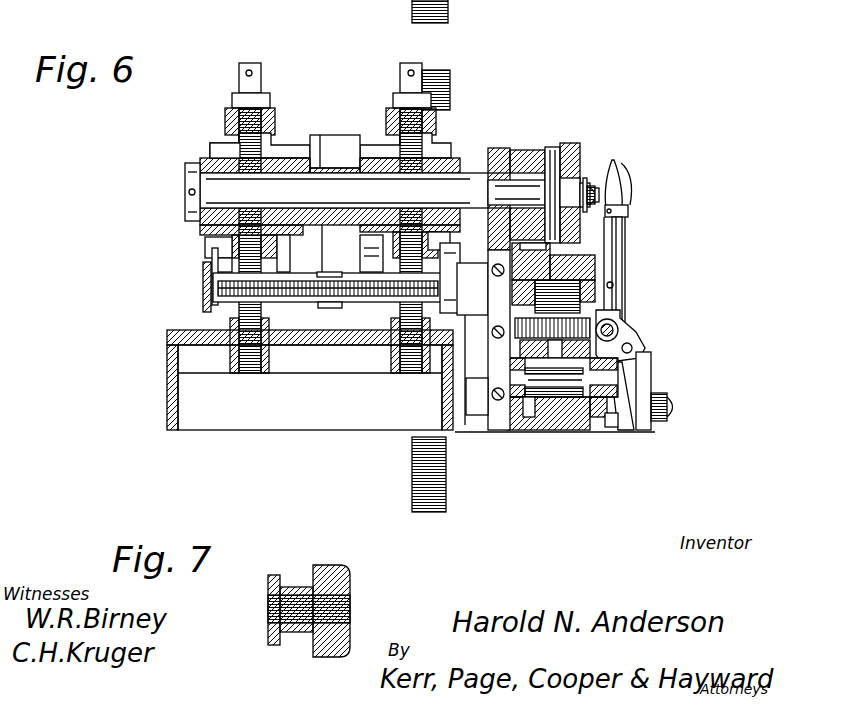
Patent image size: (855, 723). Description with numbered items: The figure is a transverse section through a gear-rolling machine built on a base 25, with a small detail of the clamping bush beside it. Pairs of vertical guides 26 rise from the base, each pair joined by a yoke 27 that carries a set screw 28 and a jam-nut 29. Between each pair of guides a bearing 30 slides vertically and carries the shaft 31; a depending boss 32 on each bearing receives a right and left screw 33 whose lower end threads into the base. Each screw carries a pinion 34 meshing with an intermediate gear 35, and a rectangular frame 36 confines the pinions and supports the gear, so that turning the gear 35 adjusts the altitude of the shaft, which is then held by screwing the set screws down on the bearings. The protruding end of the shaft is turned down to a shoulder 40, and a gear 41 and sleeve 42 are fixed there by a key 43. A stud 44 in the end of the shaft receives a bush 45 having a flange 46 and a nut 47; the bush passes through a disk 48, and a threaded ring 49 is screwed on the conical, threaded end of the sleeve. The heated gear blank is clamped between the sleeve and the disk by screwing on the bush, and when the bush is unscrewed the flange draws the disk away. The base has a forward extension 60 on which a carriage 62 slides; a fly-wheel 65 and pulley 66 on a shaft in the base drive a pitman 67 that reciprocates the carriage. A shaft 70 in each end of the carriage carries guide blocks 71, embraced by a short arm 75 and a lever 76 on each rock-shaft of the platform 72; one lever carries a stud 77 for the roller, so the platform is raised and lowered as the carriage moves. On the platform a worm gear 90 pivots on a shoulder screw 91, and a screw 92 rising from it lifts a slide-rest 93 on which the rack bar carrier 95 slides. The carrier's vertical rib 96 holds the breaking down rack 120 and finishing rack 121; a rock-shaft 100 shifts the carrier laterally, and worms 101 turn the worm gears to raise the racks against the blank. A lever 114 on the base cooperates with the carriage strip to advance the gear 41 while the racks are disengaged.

In FIG. 6, the base 25 is at (170, 353).
In FIG. 6, the vertical guides 26 is at (272, 147).
In FIG. 6, the yoke 27 is at (393, 115).
In FIG. 6, the set screw 28 is at (410, 66).
In FIG. 6, the jam-nut 29 is at (398, 100).
In FIG. 6, the bearing 30 is at (200, 228).
In FIG. 6, the shaft 31 is at (242, 186).
In FIG. 6, the depending boss 32 is at (233, 240).
In FIG. 6, the right and left screw 33 is at (207, 270).
In FIG. 6, the pinion 34 is at (233, 295).
In FIG. 6, the intermediate gear 35 is at (309, 294).
In FIG. 6, the rectangular frame 36 is at (355, 300).
In FIG. 6, the shoulder 40 is at (518, 163).
In FIG. 6, the gear 41 is at (498, 160).
In FIG. 6, the sleeve 42 is at (527, 177).
In FIG. 6, the key 43 is at (540, 180).
In FIG. 6, the stud 44 is at (593, 182).
In FIG. 6, the bush 45 is at (580, 200).
In FIG. 7, the bush 45 is at (293, 590).
In FIG. 6, the flange 46 is at (590, 193).
In FIG. 7, the flange 46 is at (277, 580).
In FIG. 6, the nut 47 is at (597, 213).
In FIG. 7, the nut 47 is at (347, 568).
In FIG. 6, the disk 48 is at (583, 180).
In FIG. 6, the threaded ring 49 is at (550, 187).
In FIG. 6, the forwardly projecting extension 60 is at (548, 420).
In FIG. 6, the carriage 62 is at (560, 440).
In FIG. 6, the fly-wheel 65 is at (416, 452).
In FIG. 6, the pulley 66 is at (236, 150).
In FIG. 6, the pitman 67 is at (479, 340).
In FIG. 6, the shaft 70 is at (547, 413).
In FIG. 6, the guide blocks 71 is at (510, 377).
In FIG. 6, the platform 72 is at (540, 400).
In FIG. 6, the short arm 75 is at (507, 400).
In FIG. 6, the lever 76 is at (650, 393).
In FIG. 6, the stud 77 is at (680, 405).
In FIG. 6, the worm gear 90 is at (634, 357).
In FIG. 6, the shoulder screw 91 is at (580, 430).
In FIG. 6, the screw 92 is at (640, 333).
In FIG. 6, the slide-rest 93 is at (600, 310).
In FIG. 6, the rack bar carrier 95 is at (600, 297).
In FIG. 6, the vertical rib 96 is at (590, 275).
In FIG. 6, the rock-shaft 100 is at (642, 342).
In FIG. 6, the worm 101 is at (640, 333).
In FIG. 6, the lever 114 is at (490, 400).
In FIG. 6, the breaking down rack 120 is at (587, 262).
In FIG. 6, the finishing rack 121 is at (587, 250).